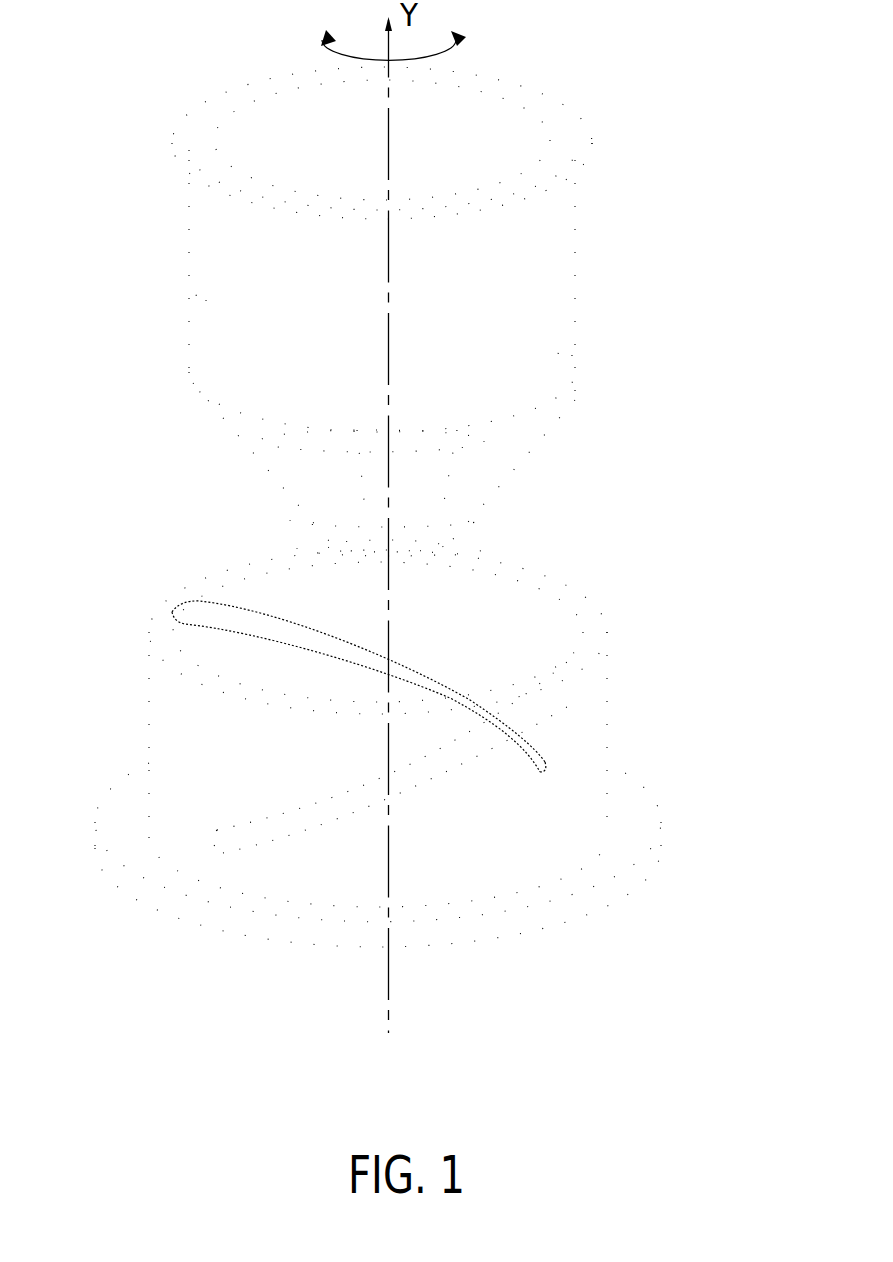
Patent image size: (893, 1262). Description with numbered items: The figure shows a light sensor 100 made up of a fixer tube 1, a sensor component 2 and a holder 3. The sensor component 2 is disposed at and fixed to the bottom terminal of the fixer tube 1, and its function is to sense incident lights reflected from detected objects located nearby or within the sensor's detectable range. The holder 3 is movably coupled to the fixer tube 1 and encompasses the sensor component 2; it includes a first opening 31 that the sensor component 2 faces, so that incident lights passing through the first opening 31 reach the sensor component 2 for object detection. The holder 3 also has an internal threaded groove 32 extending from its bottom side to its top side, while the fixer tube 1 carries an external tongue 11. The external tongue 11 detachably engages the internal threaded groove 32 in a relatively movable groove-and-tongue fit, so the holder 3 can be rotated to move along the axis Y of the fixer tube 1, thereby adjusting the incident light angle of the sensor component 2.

The light sensor 100 is at (146, 54).
The fixer tube 1 is at (523, 320).
The external tongue 11 is at (548, 398).
The sensor component 2 is at (475, 512).
The holder 3 is at (595, 748).
The first opening 31 is at (378, 946).
The internal threaded groove 32 is at (403, 780).